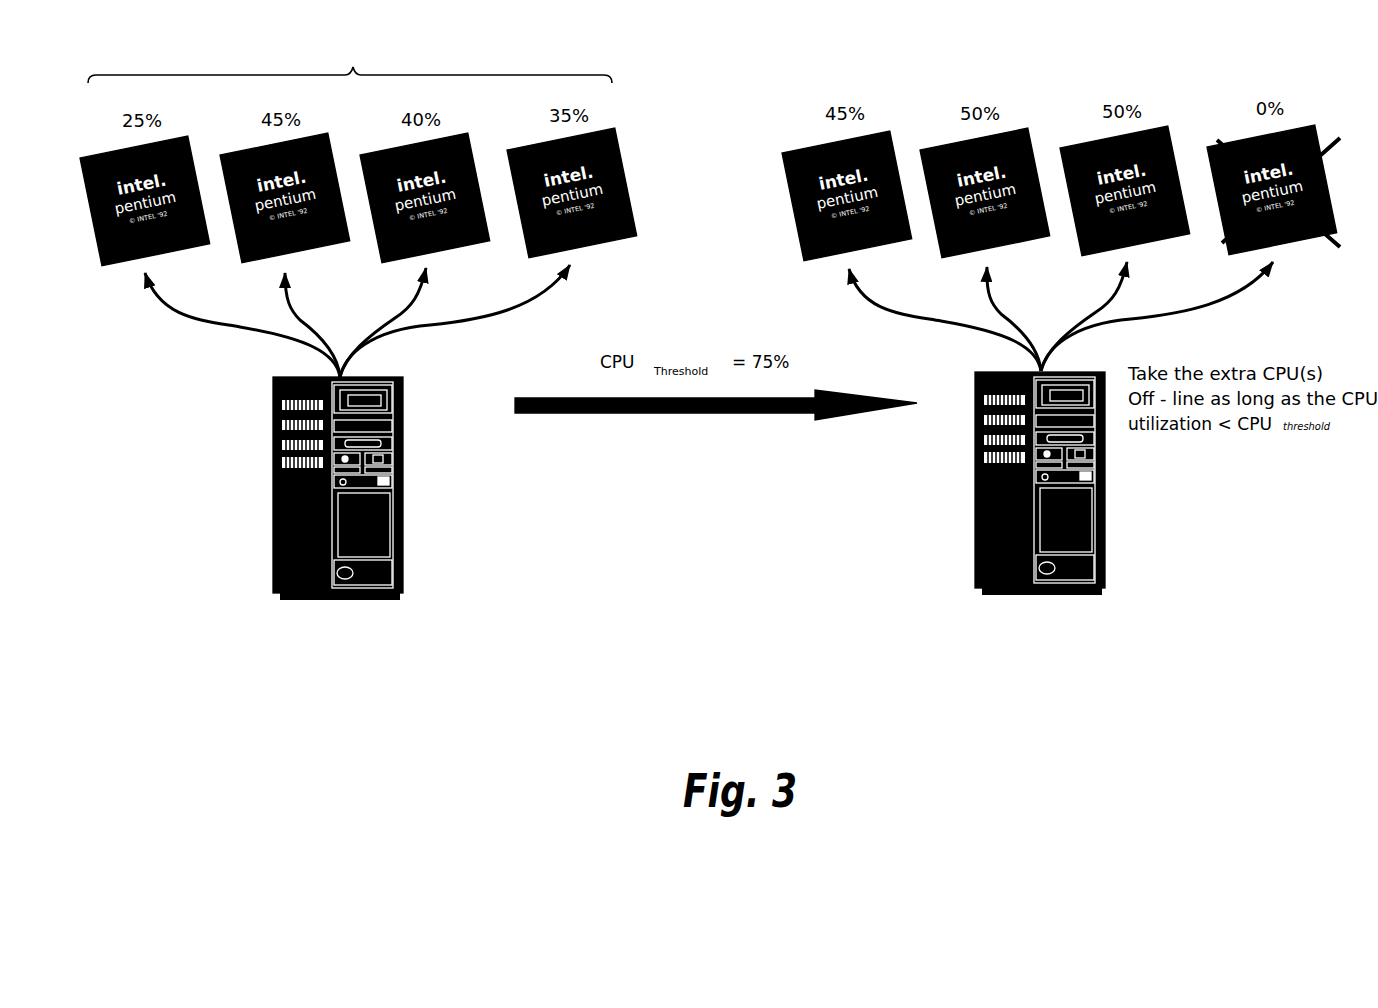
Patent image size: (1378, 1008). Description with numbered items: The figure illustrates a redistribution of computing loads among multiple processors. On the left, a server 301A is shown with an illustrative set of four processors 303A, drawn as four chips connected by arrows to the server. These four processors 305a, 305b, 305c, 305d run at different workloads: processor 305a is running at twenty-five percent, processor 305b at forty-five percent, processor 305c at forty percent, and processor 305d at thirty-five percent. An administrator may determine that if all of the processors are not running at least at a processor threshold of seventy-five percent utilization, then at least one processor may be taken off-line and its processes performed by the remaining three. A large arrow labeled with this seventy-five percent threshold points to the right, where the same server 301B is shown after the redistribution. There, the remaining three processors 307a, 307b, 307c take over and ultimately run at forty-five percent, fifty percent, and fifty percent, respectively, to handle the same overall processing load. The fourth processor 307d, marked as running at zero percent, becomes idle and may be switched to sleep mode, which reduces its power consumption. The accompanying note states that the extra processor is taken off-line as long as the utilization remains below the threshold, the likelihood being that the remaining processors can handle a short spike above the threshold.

The server 301A is at (273, 560).
The server 301B is at (975, 558).
The processors 303A is at (350, 60).
The processor 305a is at (98, 229).
The processor 305b is at (238, 245).
The processor 305c is at (383, 245).
The processor 305d is at (528, 243).
The processor 307a is at (800, 222).
The processor 307b is at (938, 241).
The processor 307c is at (1082, 240).
The processor 307d is at (1228, 240).